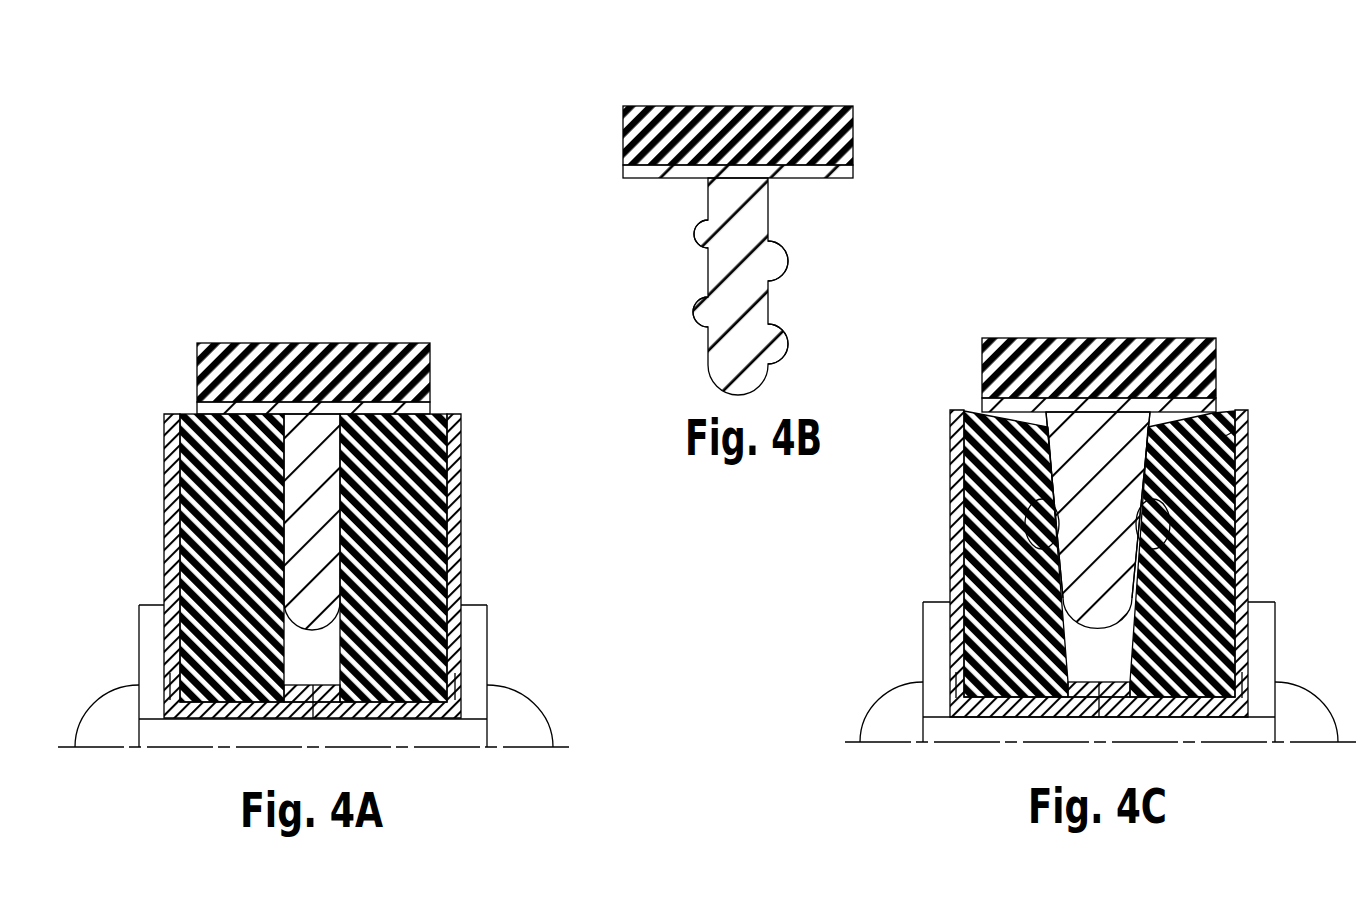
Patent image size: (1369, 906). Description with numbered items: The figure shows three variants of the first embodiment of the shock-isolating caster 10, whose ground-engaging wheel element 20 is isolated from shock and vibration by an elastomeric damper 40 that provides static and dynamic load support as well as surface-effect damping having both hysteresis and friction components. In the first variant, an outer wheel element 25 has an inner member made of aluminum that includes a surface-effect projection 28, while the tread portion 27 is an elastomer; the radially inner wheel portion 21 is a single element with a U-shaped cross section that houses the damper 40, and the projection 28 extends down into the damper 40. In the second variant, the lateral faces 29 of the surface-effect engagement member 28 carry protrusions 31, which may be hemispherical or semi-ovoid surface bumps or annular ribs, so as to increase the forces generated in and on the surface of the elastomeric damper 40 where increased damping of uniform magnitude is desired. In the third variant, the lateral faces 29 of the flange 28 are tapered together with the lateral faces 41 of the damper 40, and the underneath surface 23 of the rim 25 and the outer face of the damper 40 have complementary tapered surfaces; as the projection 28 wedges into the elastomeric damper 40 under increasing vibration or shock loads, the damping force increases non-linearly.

In FIG. 4A, the shock-isolating caster 10 is at (330, 477).
In FIG. 4C, the shock-isolating caster 10 is at (1080, 473).
In FIG. 4B, the ground-engaging wheel element 20 is at (717, 200).
In FIG. 4A, the radially inner wheel portion 21 is at (462, 562).
In FIG. 4C, the underneath surface of rim 23 is at (1249, 436).
In FIG. 4A, the outer wheel element 25 is at (194, 378).
In FIG. 4B, the outer wheel element 25 is at (621, 167).
In FIG. 4C, the outer wheel element 25 is at (1218, 393).
In FIG. 4A, the tread portion 27 is at (430, 370).
In FIG. 4B, the tread portion 27 is at (738, 105).
In FIG. 4C, the tread portion 27 is at (982, 368).
In FIG. 4A, the surface-effect projection 28 is at (280, 497).
In FIG. 4B, the surface-effect projection 28 is at (700, 355).
In FIG. 4C, the surface-effect projection 28 is at (1147, 493).
In FIG. 4C, the lateral faces of surface-effect engagement member 29 is at (1150, 500).
In FIG. 4B, the protrusions 31 is at (694, 304).
In FIG. 4A, the elastomeric damper 40 is at (378, 566).
In FIG. 4C, the elastomeric damper 40 is at (945, 546).
In FIG. 4C, the lateral faces of damper 41 is at (1135, 575).